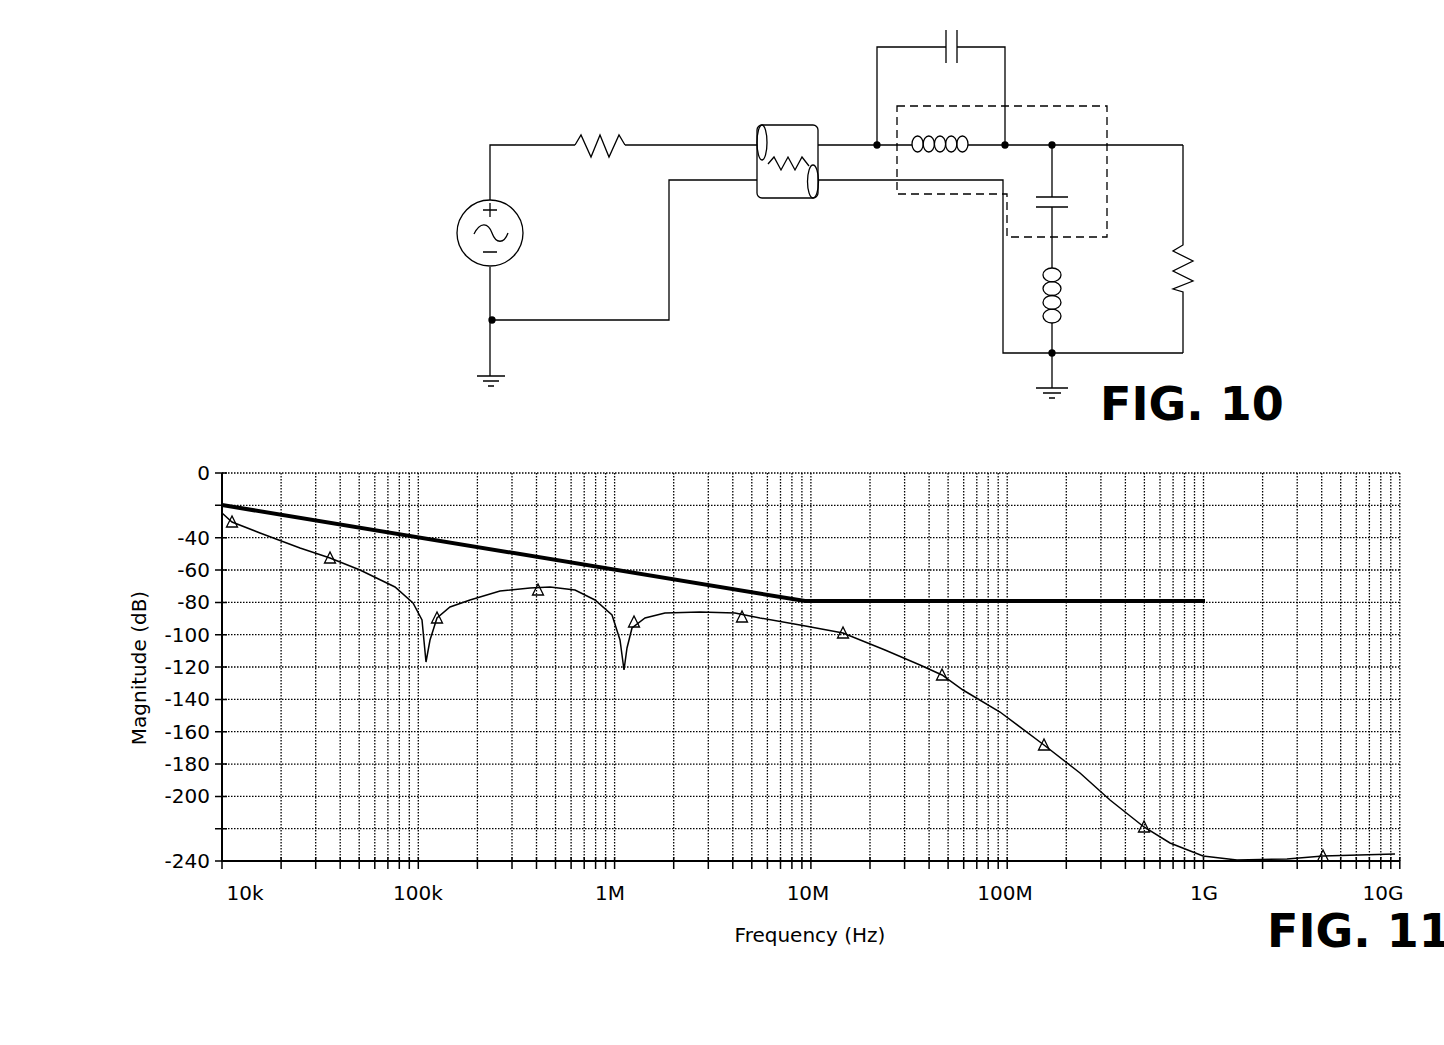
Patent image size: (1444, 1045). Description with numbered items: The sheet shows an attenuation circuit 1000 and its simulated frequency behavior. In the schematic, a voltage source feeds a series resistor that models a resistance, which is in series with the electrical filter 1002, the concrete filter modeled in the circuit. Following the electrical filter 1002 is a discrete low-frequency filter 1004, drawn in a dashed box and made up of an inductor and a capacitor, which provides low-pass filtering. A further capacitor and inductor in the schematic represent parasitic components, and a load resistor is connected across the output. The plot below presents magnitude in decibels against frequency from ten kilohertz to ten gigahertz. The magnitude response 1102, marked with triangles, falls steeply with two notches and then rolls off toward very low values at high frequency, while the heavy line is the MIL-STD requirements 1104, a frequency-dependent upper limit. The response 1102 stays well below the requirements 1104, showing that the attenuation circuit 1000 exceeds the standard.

In FIG. 10, the attenuation circuit 1000 is at (789, 71).
In FIG. 10, the electrical filter 1002 is at (781, 123).
In FIG. 10, the discrete low-frequency filter 1004 is at (1093, 106).
In FIG. 11, the magnitude response 1102 is at (885, 650).
In FIG. 11, the MIL-STD requirements 1104 is at (1030, 598).